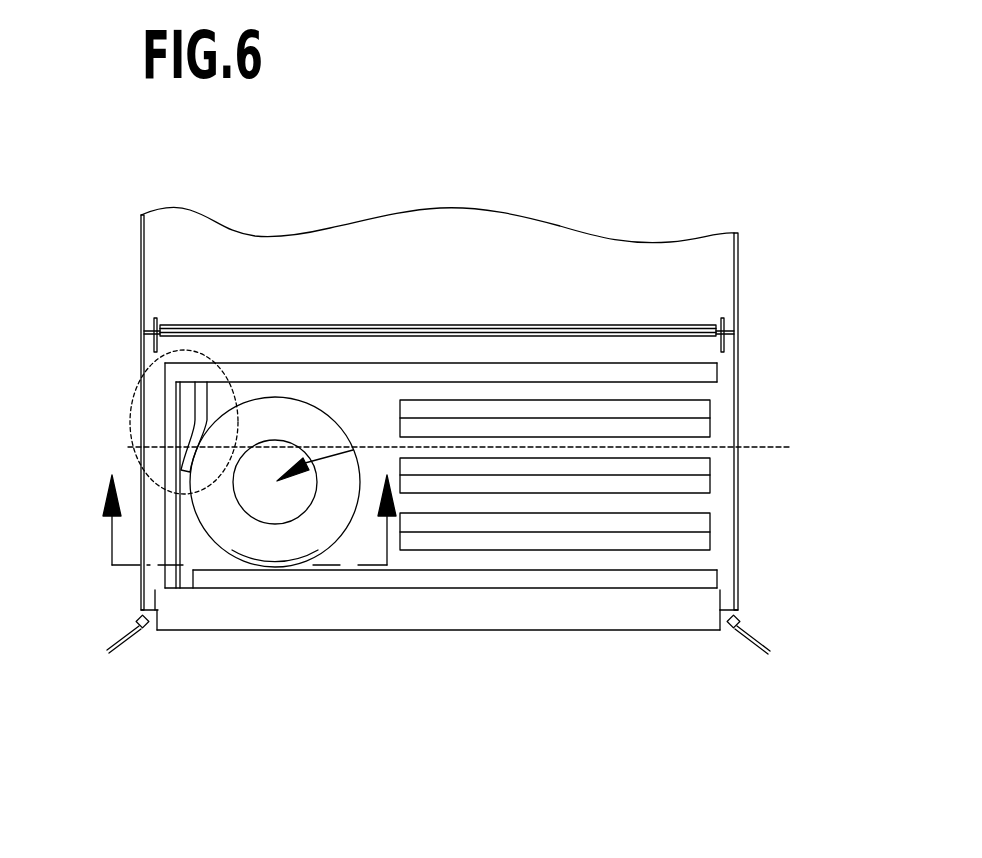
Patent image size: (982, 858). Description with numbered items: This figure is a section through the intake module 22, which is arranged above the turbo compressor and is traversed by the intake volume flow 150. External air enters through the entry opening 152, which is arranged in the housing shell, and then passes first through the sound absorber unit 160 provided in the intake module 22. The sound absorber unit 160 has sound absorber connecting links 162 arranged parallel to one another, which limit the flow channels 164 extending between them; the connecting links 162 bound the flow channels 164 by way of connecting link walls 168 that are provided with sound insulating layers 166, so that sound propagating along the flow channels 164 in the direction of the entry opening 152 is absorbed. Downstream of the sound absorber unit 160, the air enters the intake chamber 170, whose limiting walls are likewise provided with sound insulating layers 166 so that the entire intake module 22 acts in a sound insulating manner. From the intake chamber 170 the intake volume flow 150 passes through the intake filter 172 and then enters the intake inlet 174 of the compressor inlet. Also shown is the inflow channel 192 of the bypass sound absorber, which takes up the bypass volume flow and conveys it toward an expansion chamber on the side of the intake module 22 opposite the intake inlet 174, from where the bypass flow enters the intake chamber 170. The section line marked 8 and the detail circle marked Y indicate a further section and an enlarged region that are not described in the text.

The intake module 22 is at (360, 408).
The intake volume flow 150 is at (562, 447).
The entry opening 152 is at (737, 393).
The sound absorber unit 160 is at (514, 560).
The sound absorber connecting links 162 is at (678, 568).
The flow channels 164 is at (628, 558).
The sound insulating layers 166 is at (283, 375).
The connecting link walls 168 is at (452, 550).
The intake chamber 170 is at (338, 550).
The intake filter 172 is at (277, 548).
The intake inlet 174 is at (263, 500).
The inflow channel 192 is at (178, 428).
The section line 8- 8 is at (239, 520).
The detail region Y is at (130, 410).